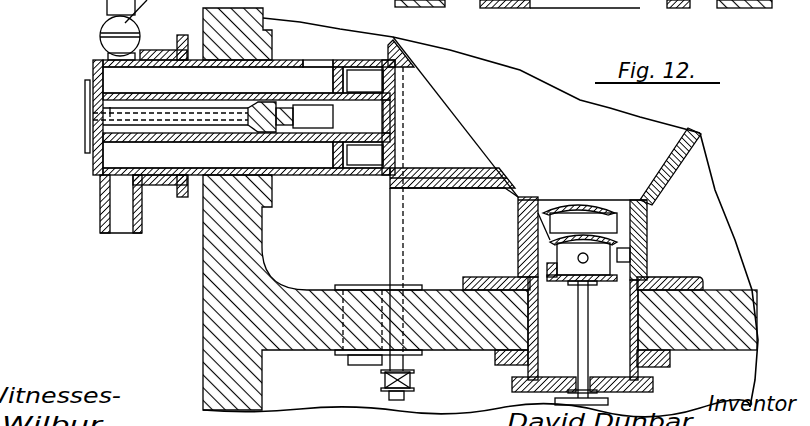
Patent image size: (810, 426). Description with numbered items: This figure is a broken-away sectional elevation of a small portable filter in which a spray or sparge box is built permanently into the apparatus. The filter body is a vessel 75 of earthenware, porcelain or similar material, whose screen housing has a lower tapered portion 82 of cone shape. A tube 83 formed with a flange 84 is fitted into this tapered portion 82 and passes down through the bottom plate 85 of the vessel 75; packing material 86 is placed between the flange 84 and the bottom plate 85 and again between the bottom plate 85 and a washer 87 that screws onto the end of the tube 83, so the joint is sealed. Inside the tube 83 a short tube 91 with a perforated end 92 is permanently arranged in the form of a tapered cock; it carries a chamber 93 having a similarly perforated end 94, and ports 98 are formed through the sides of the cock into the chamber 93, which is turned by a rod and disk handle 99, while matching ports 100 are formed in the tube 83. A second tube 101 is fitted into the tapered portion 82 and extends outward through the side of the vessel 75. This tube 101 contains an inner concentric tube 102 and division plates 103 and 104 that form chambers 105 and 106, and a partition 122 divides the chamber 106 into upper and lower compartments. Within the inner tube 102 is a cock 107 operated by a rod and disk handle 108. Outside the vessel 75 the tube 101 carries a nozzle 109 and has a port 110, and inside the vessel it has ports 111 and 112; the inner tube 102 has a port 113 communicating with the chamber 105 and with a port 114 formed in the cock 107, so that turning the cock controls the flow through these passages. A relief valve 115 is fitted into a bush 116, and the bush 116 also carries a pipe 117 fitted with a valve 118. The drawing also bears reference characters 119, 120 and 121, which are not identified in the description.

The vessel 75 is at (247, 240).
The lower tapered portion of housing frame 82 is at (680, 144).
The tube 83 is at (582, 334).
The flange 84 is at (527, 281).
The bottom plate 85 is at (733, 297).
The packing material 86 is at (705, 280).
The washer 87 is at (670, 360).
The short tube 91 is at (647, 225).
The perforated end 92 is at (597, 203).
The chamber 93 is at (582, 259).
The perforated end of chamber 94 is at (602, 232).
The ports 98 is at (632, 255).
The rod and disk handle 99 is at (583, 360).
The ports 100 is at (537, 258).
The tube 101 is at (207, 165).
The inner concentric tube 102 is at (263, 147).
The division plate 103 is at (333, 82).
The division plate 104 is at (386, 143).
The chamber 105 is at (364, 80).
The chamber 106 is at (218, 80).
The cock 107 is at (282, 117).
The rod and disk handle 108 is at (108, 98).
The nozzle 109 is at (118, 188).
The port 110 is at (123, 63).
The port 111 is at (319, 62).
The port 112 is at (365, 60).
The port 113 is at (383, 96).
The port 114 is at (373, 103).
The relief valve 115 is at (362, 366).
The bush 116 is at (343, 323).
The pipe 117 is at (397, 262).
The valve 118 is at (410, 381).
The chamber 119 is at (331, 217).
The lower partition 120 is at (331, 141).
The inner tube wall 121 is at (291, 142).
The partition 122 is at (163, 115).